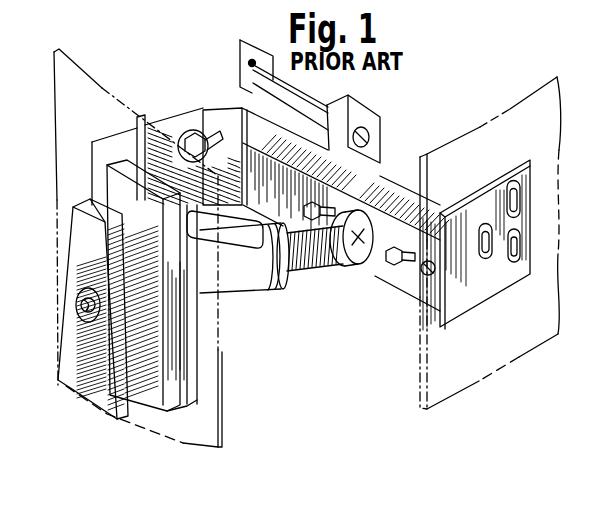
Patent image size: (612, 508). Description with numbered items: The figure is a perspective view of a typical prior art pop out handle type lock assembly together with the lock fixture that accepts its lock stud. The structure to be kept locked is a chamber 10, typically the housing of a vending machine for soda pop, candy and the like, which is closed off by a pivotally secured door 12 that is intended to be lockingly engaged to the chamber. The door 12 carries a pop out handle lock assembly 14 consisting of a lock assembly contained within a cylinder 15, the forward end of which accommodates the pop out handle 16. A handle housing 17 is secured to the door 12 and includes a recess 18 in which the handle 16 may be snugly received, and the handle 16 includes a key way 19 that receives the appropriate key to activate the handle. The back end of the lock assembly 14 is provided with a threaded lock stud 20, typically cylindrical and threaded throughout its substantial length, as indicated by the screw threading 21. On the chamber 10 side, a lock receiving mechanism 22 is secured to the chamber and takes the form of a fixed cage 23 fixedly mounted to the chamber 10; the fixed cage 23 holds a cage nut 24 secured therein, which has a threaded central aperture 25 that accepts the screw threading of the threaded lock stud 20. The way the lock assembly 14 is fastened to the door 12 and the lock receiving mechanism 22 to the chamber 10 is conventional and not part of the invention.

The chamber 10 is at (444, 387).
The door 12 is at (86, 90).
The pop out handle lock assembly 14 is at (149, 298).
The cylinder 15 is at (262, 303).
The pop out handle 16 is at (99, 367).
The handle housing 17 is at (189, 409).
The recess 18 is at (148, 386).
The key way 19 is at (77, 311).
The threaded lock stud 20 is at (308, 270).
The screw threading 21 is at (303, 285).
The lock receiving mechanism 22 is at (391, 125).
The fixed cage 23 is at (379, 173).
The cage nut 24 is at (348, 207).
The central aperture 25 is at (372, 265).